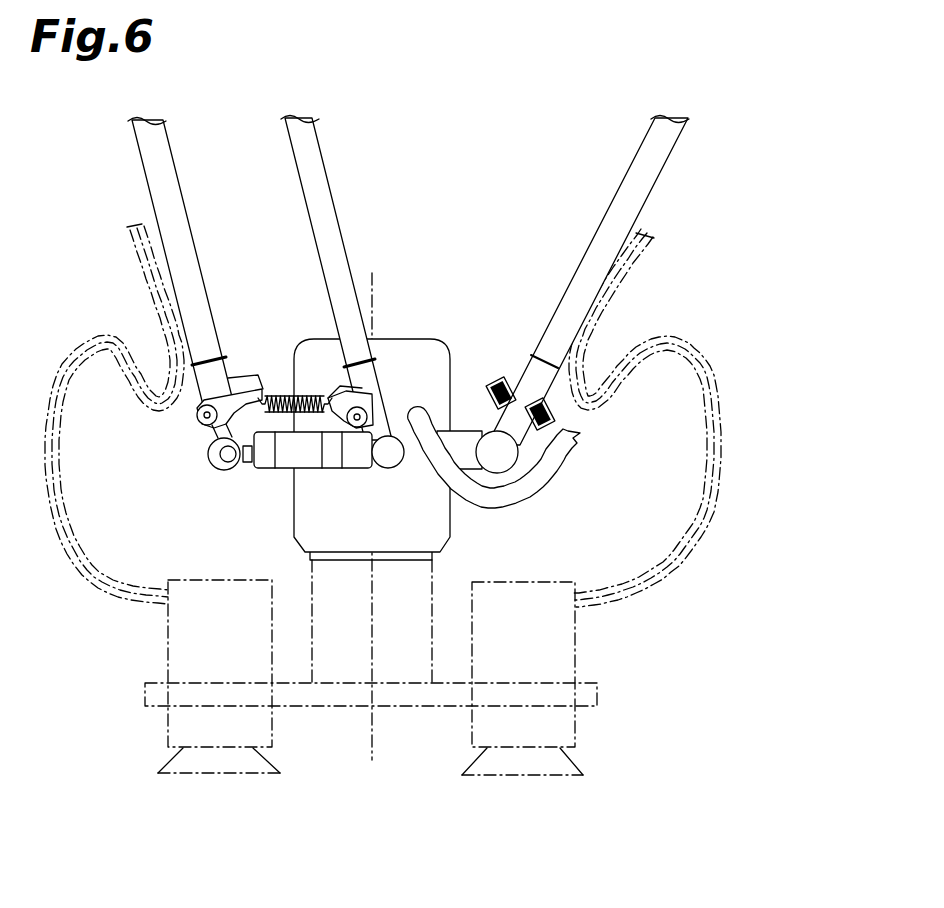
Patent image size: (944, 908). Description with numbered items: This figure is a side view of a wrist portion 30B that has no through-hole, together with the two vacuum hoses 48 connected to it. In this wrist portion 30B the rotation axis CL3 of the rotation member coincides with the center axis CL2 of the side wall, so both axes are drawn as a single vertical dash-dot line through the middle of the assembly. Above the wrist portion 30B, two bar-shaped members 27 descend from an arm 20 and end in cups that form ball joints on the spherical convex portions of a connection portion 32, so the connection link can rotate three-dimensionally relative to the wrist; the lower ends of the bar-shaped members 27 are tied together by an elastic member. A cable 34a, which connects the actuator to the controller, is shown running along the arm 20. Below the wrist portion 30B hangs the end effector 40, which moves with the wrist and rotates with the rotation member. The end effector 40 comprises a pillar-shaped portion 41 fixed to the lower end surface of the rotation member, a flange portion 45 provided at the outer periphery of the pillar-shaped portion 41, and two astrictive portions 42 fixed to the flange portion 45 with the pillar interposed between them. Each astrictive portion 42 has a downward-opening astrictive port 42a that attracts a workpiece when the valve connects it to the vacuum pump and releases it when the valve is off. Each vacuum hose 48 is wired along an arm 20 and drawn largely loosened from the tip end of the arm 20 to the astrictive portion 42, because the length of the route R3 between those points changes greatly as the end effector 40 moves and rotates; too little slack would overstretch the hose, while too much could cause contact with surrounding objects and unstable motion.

The arm 20 is at (117, 181).
The bar-shaped member 27 is at (155, 152).
The wrist portion 30B is at (452, 270).
The center axis CL2 is at (398, 488).
The rotation axis CL3 is at (373, 280).
The connection portion 32 is at (463, 442).
The cable 34a is at (520, 488).
The vacuum hose 48 is at (70, 367).
The route R3 is at (60, 455).
The end effector 40 is at (700, 586).
The pillar-shaped portion 41 is at (331, 660).
The astrictive portion 42 is at (168, 648).
The astrictive port 42a is at (221, 775).
The flange portion 45 is at (597, 690).